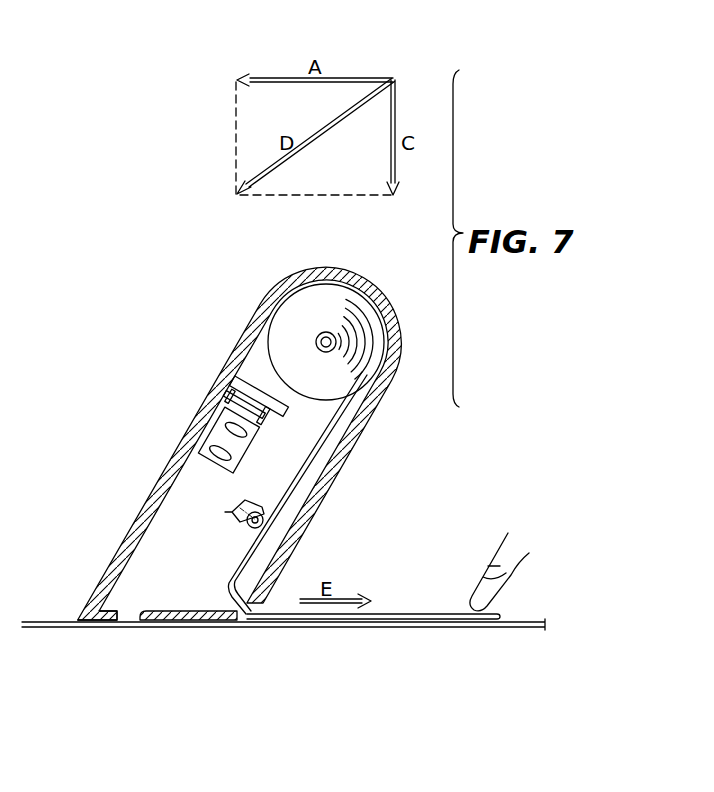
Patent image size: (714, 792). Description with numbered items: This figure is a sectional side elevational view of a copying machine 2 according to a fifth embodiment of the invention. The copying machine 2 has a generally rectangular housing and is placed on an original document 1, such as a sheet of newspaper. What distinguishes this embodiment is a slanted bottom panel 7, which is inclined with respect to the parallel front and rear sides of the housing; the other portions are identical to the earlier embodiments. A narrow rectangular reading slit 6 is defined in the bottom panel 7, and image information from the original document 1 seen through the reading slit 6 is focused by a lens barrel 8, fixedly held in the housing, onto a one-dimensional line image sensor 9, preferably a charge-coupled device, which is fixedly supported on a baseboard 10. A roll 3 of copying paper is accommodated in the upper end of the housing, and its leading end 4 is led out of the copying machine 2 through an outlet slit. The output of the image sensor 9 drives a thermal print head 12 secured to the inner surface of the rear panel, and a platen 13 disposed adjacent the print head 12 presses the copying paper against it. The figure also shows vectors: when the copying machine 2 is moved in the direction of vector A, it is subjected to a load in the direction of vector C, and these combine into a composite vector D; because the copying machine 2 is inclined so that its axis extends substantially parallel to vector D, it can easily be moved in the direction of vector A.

The original document 1 is at (262, 628).
The copying machine 2 is at (173, 466).
The roll of copying media 3 is at (363, 372).
The leading end 4 is at (432, 613).
The reading slit 6 is at (125, 622).
The bottom panel 7 is at (180, 622).
The lens barrel 8 is at (223, 433).
The one-dimensional line image sensor 9 is at (238, 402).
The baseboard 10 is at (246, 377).
The print head 12 is at (273, 532).
The platen 13 is at (265, 512).